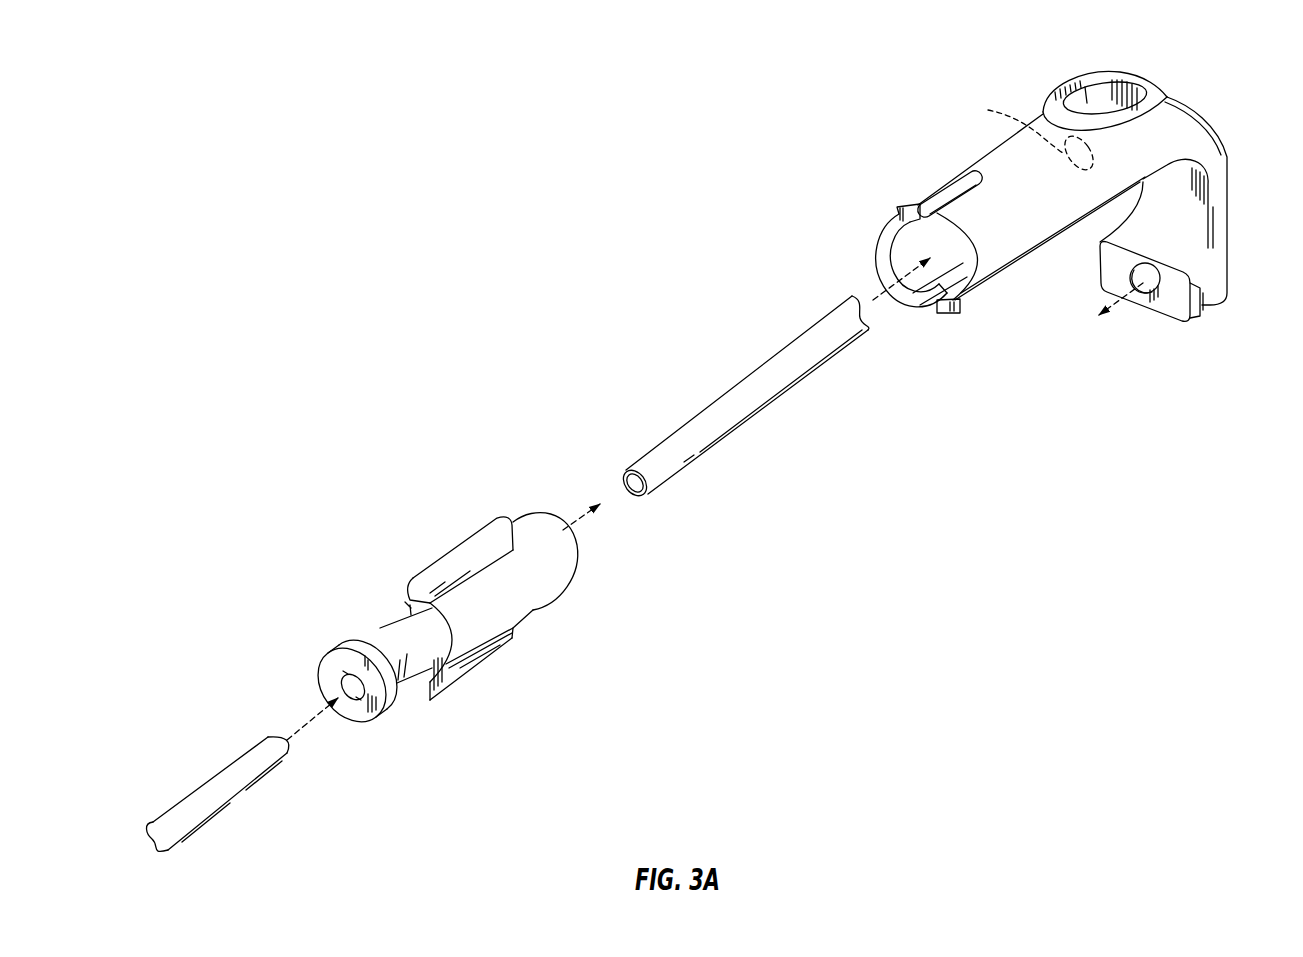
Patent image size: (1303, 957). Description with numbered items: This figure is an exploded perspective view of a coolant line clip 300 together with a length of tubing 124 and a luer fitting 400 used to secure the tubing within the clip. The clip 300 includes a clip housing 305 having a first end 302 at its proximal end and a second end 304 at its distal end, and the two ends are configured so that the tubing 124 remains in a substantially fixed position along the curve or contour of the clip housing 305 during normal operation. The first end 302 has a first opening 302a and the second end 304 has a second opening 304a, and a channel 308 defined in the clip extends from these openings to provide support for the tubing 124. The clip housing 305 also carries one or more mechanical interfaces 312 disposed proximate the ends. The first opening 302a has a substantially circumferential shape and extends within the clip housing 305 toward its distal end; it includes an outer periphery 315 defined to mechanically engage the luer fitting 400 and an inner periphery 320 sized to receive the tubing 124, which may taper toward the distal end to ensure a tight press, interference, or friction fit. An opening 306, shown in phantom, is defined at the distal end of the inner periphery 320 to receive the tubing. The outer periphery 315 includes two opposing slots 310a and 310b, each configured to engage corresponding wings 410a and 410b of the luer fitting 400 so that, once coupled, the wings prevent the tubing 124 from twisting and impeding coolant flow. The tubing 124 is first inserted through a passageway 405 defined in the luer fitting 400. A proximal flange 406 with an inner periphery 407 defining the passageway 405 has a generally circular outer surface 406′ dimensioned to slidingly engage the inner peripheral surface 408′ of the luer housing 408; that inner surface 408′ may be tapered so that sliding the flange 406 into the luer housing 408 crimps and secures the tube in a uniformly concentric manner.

The clip 300 is at (538, 245).
The clip housing 305 is at (875, 103).
The first end 302 is at (890, 212).
The first opening 302a is at (918, 246).
The opening 306 is at (1019, 134).
The channel 308 is at (1087, 105).
The slot 310a is at (937, 207).
The slot 310b is at (927, 313).
The mechanical interface 312 is at (1205, 305).
The outer periphery 315 is at (998, 172).
The inner periphery 320 is at (905, 260).
The second end 304 is at (1180, 312).
The second opening 304a is at (1133, 282).
The tubing 124 is at (728, 400).
The luer fitting 400 is at (388, 503).
The passageway 405 is at (338, 683).
The inner periphery 407 is at (353, 690).
The proximal flange 406 is at (422, 692).
The outer surface 406′ is at (380, 637).
The luer housing 408 is at (497, 607).
The inner peripheral surface 408′ is at (402, 606).
The wing 410a is at (467, 550).
The wing 410b is at (487, 653).